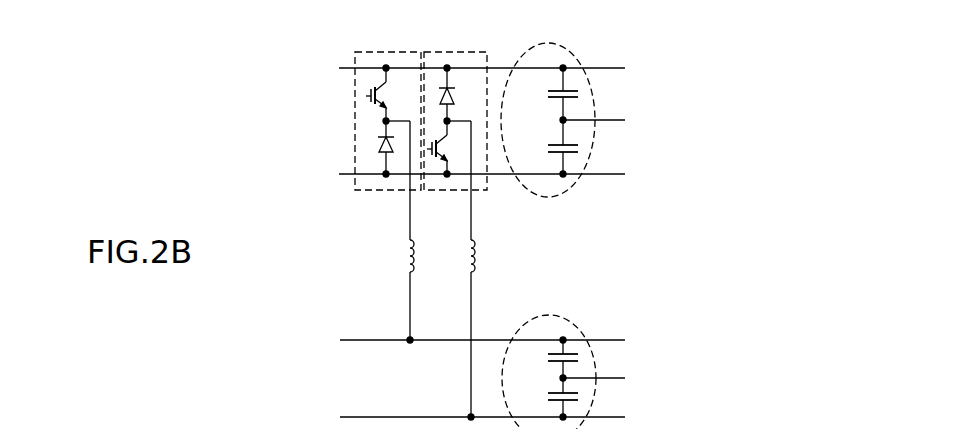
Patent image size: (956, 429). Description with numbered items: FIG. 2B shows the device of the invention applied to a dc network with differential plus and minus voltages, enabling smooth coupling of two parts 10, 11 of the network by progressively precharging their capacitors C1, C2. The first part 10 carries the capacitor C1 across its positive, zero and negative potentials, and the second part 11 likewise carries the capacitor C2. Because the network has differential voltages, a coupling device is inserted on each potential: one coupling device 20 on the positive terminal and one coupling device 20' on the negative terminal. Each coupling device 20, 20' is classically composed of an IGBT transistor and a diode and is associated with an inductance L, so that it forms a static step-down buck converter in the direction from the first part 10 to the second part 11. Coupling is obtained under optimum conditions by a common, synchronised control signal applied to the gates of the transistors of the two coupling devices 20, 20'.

The first part of the dc network 10 is at (315, 60).
The second part of the dc network 11 is at (315, 333).
The coupling device 20 is at (388, 97).
The coupling device 20' is at (463, 97).
The capacitor C1 is at (548, 117).
The capacitor C2 is at (549, 369).
The inductance L is at (433, 269).